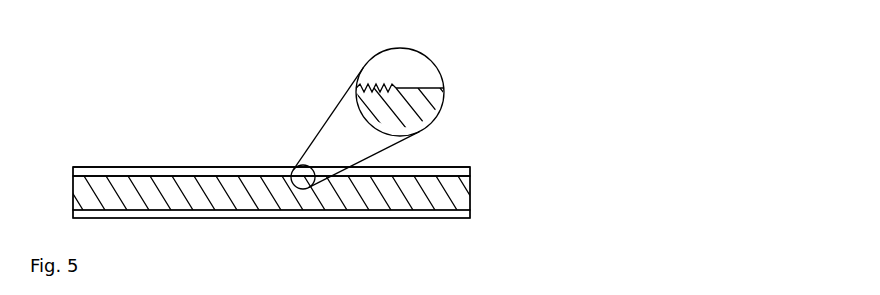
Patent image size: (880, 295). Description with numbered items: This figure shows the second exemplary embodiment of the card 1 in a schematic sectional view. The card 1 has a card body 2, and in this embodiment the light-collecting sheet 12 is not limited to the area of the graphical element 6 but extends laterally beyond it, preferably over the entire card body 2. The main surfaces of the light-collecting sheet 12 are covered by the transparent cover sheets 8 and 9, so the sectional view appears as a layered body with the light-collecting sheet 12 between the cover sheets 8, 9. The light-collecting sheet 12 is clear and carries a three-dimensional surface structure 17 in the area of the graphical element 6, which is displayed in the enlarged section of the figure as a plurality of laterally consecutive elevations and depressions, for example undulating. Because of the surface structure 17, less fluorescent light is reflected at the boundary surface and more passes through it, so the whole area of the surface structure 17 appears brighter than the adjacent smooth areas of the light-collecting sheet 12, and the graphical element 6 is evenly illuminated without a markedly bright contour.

The card 1 is at (245, 157).
The card body 2 is at (90, 167).
The graphical element 6 is at (190, 176).
The transparent cover sheet 8 is at (471, 171).
The transparent cover sheet 9 is at (471, 218).
The light-collecting sheet 12 is at (471, 192).
The three-dimensional surface structure 17 is at (383, 83).